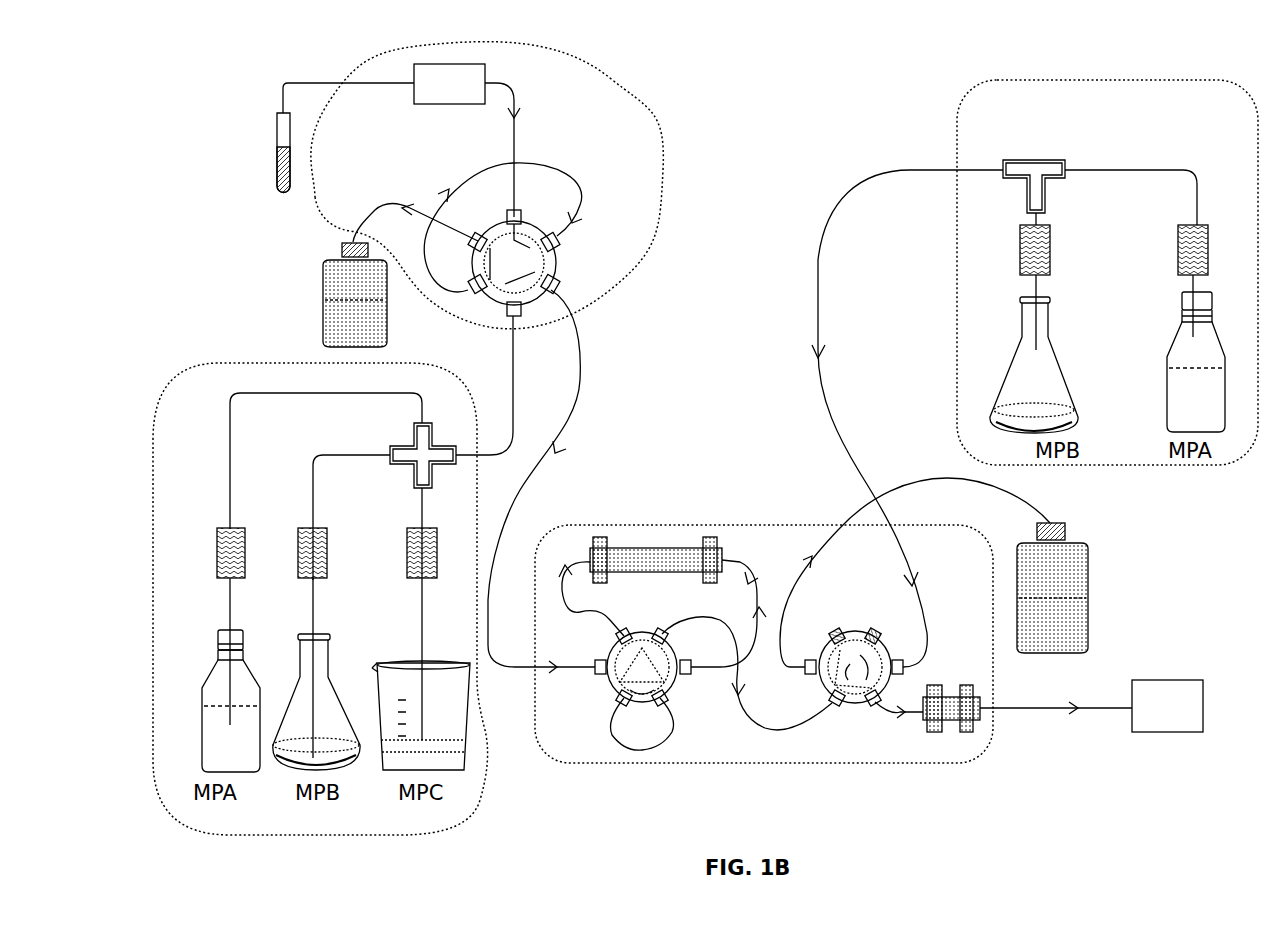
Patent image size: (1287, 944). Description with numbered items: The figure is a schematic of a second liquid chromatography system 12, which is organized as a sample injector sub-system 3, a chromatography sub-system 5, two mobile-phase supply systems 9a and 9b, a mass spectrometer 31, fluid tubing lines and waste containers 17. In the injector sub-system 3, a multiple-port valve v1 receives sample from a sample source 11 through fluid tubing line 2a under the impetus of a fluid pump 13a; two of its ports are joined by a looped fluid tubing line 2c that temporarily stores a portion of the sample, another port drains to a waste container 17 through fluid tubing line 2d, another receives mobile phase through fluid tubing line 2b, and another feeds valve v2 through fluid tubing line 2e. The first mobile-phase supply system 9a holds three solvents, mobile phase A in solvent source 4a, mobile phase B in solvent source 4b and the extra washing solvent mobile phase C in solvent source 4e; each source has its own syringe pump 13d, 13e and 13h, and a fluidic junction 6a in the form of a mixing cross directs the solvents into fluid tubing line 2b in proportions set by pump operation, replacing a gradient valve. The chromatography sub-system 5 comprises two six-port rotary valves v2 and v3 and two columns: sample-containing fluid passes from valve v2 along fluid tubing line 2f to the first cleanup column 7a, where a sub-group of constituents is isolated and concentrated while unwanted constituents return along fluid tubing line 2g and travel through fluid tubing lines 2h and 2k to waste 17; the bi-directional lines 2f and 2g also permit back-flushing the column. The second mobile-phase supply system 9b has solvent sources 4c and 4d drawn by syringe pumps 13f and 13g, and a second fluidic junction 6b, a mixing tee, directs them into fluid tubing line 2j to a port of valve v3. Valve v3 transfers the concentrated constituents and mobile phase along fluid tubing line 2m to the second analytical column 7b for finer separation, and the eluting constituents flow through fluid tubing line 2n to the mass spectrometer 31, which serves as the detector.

The liquid chromatography system 12 is at (328, 37).
The sample source 11 is at (268, 155).
The fluid pump 13a is at (448, 105).
The fluid tubing line 2a is at (517, 145).
The sample injector sub-system 3 is at (660, 157).
The multiple-port valve v1 is at (568, 260).
The looped fluid tubing line 2c is at (572, 178).
The fluid tubing line 2d is at (365, 213).
The waste container 17 is at (393, 325).
The fluid tubing line 2b is at (515, 407).
The fluid tubing line 2e is at (583, 382).
The fluidic junction 6a is at (397, 433).
The syringe pump 13d is at (217, 537).
The syringe pump 13e is at (298, 535).
The syringe pump 13h is at (407, 535).
The solvent source 4a is at (200, 660).
The solvent source 4b is at (290, 665).
The solvent source 4e is at (385, 663).
The mobile-phase supply system 9a is at (375, 835).
The chromatography sub-system 5 is at (535, 743).
The first chromatographic column 7a is at (662, 582).
The fluid tubing line 2f is at (560, 600).
The fluid tubing line 2g is at (747, 567).
The multiple-port valve v2 is at (682, 690).
The fluid tubing line 2h is at (780, 731).
The multiple-port valve v3 is at (812, 688).
The fluid tubing line 2m is at (888, 715).
The second chromatographic column 7b is at (958, 672).
The fluid tubing line 2n is at (1112, 705).
The mass spectrometer 31 is at (1177, 677).
The fluid tubing line 2j is at (832, 418).
The fluid tubing line 2k is at (950, 478).
The mobile-phase supply system 9b is at (957, 242).
The second fluidic junction 6b is at (1008, 152).
The syringe pump 13g is at (1020, 243).
The syringe pump 13f is at (1178, 243).
The solvent source 4d is at (1062, 330).
The solvent source 4c is at (1222, 303).